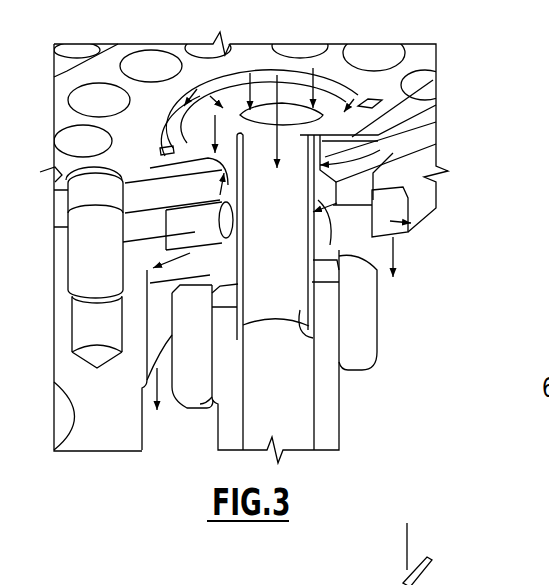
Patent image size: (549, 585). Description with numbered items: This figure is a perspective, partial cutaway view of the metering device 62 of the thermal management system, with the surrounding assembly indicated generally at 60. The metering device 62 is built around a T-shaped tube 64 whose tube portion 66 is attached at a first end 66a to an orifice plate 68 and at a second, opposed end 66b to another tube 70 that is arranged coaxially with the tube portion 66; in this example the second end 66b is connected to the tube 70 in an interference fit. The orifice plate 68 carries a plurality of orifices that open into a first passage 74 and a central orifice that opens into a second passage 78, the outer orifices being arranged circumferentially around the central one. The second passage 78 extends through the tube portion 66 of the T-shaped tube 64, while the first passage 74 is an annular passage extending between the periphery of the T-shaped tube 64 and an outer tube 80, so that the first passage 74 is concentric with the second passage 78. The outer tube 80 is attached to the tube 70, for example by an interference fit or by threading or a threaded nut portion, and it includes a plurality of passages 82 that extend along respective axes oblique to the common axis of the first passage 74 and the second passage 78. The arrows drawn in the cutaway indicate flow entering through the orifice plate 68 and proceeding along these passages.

The fuel injector assembly 60 is at (177, 455).
The metering device 62 is at (436, 122).
The T-shaped tube 64 is at (436, 150).
The tube portion 66 is at (340, 256).
The first end 66a is at (436, 78).
The second end 66b is at (313, 338).
The orifice plate 68 is at (296, 100).
The tube 70 is at (338, 420).
The first passage 74 is at (220, 196).
The second passage 78 is at (405, 220).
The outer tube 80 is at (377, 352).
The passages 82 is at (158, 285).